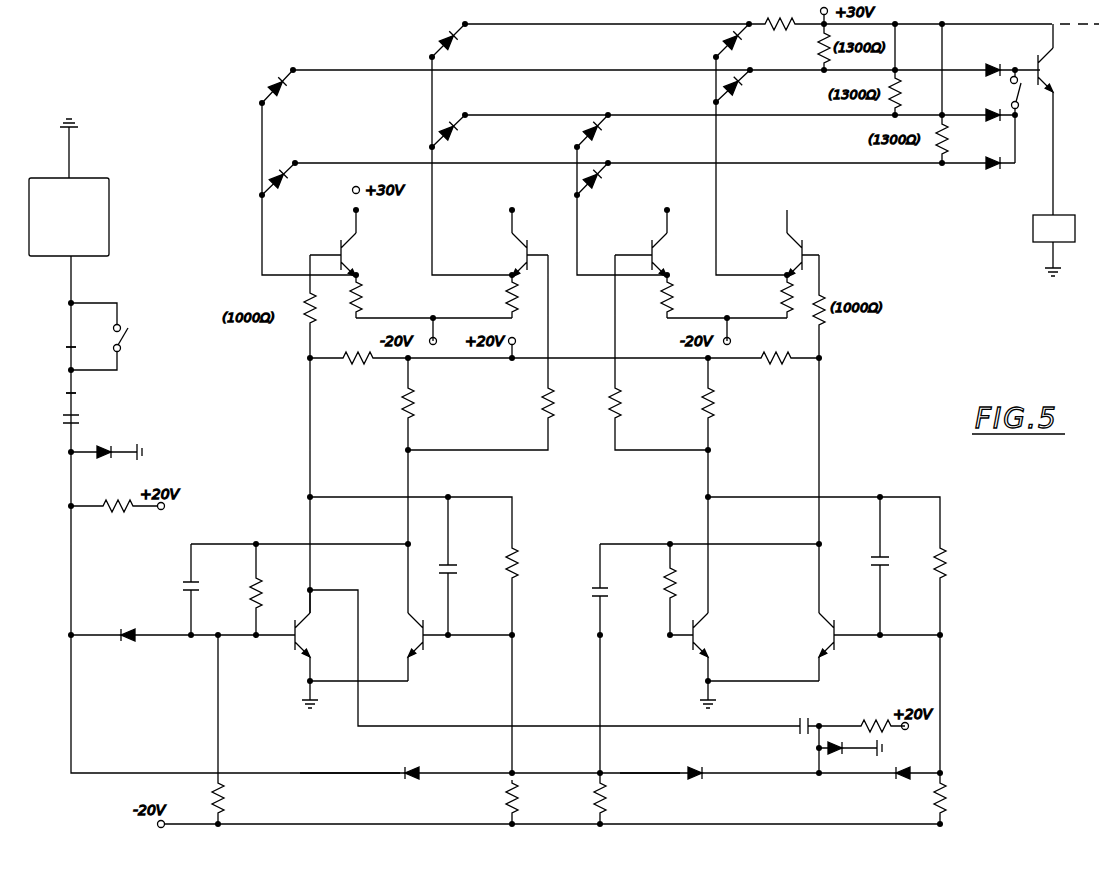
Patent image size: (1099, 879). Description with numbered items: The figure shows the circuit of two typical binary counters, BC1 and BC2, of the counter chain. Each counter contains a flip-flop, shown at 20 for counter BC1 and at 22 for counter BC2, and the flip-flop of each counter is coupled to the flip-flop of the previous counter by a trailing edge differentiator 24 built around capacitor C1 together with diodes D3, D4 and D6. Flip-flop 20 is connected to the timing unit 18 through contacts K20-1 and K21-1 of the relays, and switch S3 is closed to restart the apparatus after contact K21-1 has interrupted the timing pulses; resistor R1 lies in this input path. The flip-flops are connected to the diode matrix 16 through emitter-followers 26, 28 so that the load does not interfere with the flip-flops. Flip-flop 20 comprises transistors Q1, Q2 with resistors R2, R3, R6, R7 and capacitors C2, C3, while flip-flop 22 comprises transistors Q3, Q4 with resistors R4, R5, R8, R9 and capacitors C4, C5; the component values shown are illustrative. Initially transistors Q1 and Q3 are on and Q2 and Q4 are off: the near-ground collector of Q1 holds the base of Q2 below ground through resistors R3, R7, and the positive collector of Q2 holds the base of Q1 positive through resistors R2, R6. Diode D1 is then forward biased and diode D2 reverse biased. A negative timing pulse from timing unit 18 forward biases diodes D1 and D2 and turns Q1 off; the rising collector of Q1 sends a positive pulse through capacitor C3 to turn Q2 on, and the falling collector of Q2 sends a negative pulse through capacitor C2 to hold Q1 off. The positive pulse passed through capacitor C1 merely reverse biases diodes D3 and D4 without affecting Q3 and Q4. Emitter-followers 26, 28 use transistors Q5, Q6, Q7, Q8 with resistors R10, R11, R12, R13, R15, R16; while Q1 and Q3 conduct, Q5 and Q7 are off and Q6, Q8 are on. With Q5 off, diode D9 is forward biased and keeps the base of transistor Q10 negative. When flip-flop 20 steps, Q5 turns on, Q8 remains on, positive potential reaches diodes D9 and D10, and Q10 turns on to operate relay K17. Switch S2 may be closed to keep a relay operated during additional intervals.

The diode matrix 16 is at (552, 99).
The timing unit 18 is at (109, 217).
The flip-flop 20 is at (386, 608).
The flip-flop 22 is at (775, 594).
The trailing edge differentiator 24 is at (838, 710).
The emitter-follower 26 is at (418, 239).
The emitter-follower 28 is at (762, 239).
The transistor Q1 is at (313, 635).
The transistor Q2 is at (406, 635).
The transistor Q3 is at (712, 635).
The transistor Q4 is at (814, 635).
The transistor Q5 is at (358, 255).
The transistor Q6 is at (506, 255).
The transistor Q7 is at (644, 255).
The transistor Q8 is at (809, 255).
The transistor Q10 is at (1061, 70).
The resistor R1 is at (113, 527).
The resistor R2 is at (250, 576).
The resistor R3 is at (515, 580).
The resistor R4 is at (664, 592).
The resistor R5 is at (977, 563).
The resistor R6 is at (232, 798).
The resistor R7 is at (527, 798).
The resistor R8 is at (614, 798).
The resistor R9 is at (954, 798).
The resistor R10 is at (437, 403).
The resistor R11 is at (738, 402).
The resistor R12 is at (348, 360).
The resistor R13 is at (792, 354).
The resistor R15 is at (574, 413).
The resistor R16 is at (645, 403).
The capacitor C1 is at (806, 718).
The capacitor C2 is at (164, 596).
The capacitor C3 is at (469, 568).
The capacitor C4 is at (572, 596).
The capacitor C5 is at (857, 568).
The diode D1 is at (128, 646).
The diode D2 is at (413, 783).
The diode D3 is at (695, 785).
The diode D4 is at (902, 785).
The diode D6 is at (850, 758).
The diode D9 is at (285, 132).
The diode D10 is at (744, 63).
The switch S2 is at (1025, 93).
The switch S3 is at (131, 338).
The relay K17 is at (1054, 245).
The contact K21-1 is at (43, 349).
The contact K20-1 is at (43, 395).
The binary counter BC1 is at (368, 754).
The binary counter BC2 is at (757, 754).